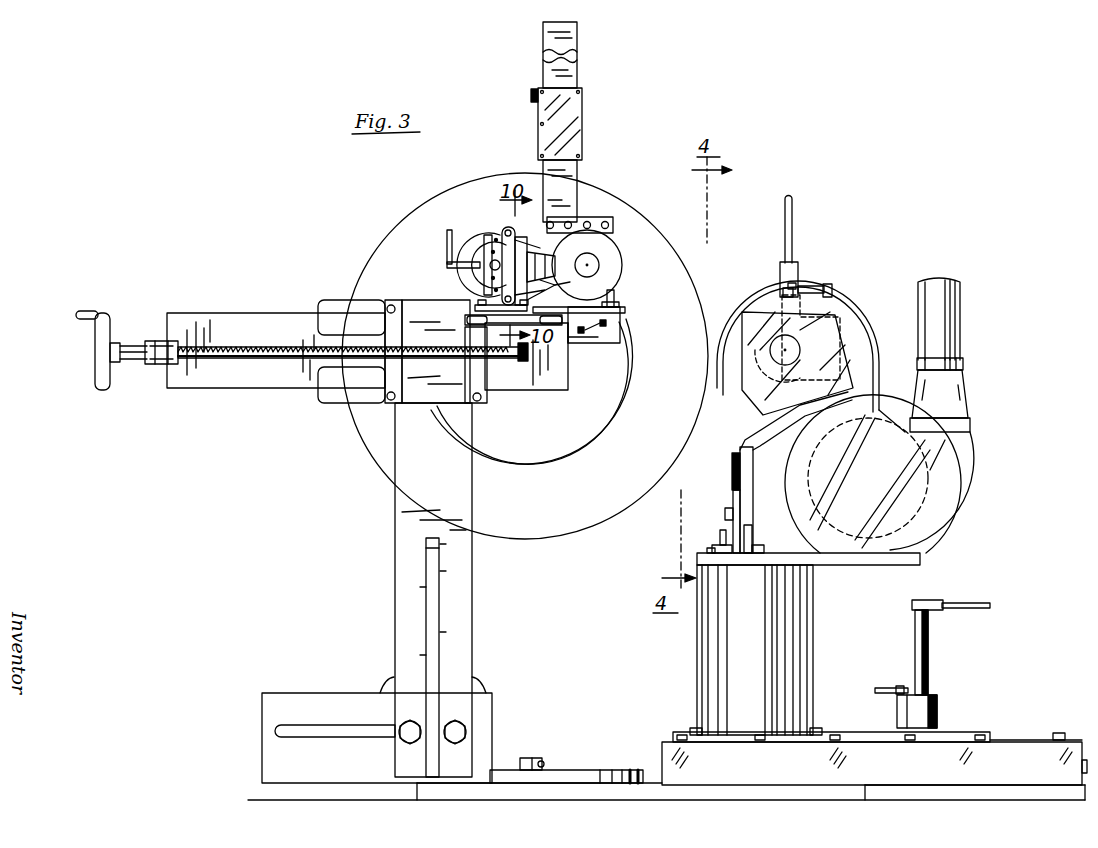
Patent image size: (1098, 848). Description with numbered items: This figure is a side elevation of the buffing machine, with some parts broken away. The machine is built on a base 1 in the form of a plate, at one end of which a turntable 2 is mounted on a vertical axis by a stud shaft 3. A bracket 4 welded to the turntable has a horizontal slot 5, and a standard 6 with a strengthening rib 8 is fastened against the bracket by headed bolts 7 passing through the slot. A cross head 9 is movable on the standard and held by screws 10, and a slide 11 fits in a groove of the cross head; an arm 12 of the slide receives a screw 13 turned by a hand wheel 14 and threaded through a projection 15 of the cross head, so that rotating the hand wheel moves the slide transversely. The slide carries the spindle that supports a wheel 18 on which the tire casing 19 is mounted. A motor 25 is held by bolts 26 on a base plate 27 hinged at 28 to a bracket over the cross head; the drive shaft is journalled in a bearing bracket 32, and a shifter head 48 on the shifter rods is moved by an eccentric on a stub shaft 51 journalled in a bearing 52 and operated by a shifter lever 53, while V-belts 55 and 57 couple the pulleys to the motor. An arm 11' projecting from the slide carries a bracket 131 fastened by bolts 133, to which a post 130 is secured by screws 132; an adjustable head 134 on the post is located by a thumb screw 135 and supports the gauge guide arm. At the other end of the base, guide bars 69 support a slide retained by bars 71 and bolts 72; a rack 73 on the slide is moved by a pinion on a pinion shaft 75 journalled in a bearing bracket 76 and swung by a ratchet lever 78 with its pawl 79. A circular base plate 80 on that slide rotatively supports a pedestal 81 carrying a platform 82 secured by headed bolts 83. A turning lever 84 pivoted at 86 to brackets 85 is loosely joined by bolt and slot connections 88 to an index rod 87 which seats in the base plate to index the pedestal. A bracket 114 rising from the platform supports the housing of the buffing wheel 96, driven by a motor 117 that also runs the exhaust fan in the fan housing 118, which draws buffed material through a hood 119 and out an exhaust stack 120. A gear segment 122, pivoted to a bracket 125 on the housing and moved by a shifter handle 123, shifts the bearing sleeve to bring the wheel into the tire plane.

The base 1 is at (648, 790).
The turntable 2 is at (585, 775).
The stud shaft 3 is at (532, 758).
The bracket 4 is at (338, 774).
The slot 5 is at (285, 728).
The standard 6 is at (410, 507).
The headed bolts 7 is at (405, 728).
The strengthening rib 8 is at (432, 613).
The cross head 9 is at (340, 372).
The screws 10 is at (389, 305).
The slide 11 is at (276, 332).
The arm 11' is at (573, 360).
The arm 12 is at (160, 364).
The screw 13 is at (248, 360).
The hand wheel 14 is at (100, 358).
The threaded projection 15 is at (342, 390).
The wheel 18 is at (552, 438).
The tire casing 19 is at (592, 500).
The motor 25 is at (622, 262).
The machine bolts 26 is at (614, 300).
The base plate 27 is at (625, 311).
The hinge 28 is at (466, 320).
The bearing bracket 32 is at (490, 290).
The shifter head 48 is at (495, 260).
The stub shaft 51 is at (448, 265).
The bearing 52 is at (486, 250).
The shifter lever 53 is at (447, 235).
The V-belt 55 is at (559, 277).
The V-belt 57 is at (540, 238).
The guide bars 69 is at (790, 781).
The bars 71 is at (1015, 742).
The bolts 72 is at (1059, 733).
The rack 73 is at (955, 734).
The pinion shaft 75 is at (930, 655).
The bearing bracket 76 is at (938, 705).
The ratchet lever 78 is at (965, 603).
The pawl 79 is at (930, 600).
The circular base plate 80 is at (818, 734).
The pedestal 81 is at (756, 652).
The platform 82 is at (840, 565).
The headed bolts 83 is at (708, 553).
The turning lever 84 is at (732, 466).
The brackets 85 is at (752, 548).
The pivot 86 is at (742, 530).
The index rod 87 is at (718, 547).
The bolt and slot connections 88 is at (725, 512).
The buffing wheel 96 is at (742, 360).
The bracket 114 is at (758, 436).
The motor 117 is at (753, 480).
The fan housing 118 is at (880, 478).
The hood 119 is at (825, 345).
The exhaust stack 120 is at (948, 322).
The gear segment 122 is at (798, 268).
The shifter handle 123 is at (792, 210).
The bracket 125 is at (812, 286).
The post 130 is at (575, 58).
The bracket 131 is at (615, 225).
The screws 132 is at (552, 223).
The bolts 133 is at (608, 328).
The adjustable head 134 is at (568, 108).
The thumb screw 135 is at (531, 94).